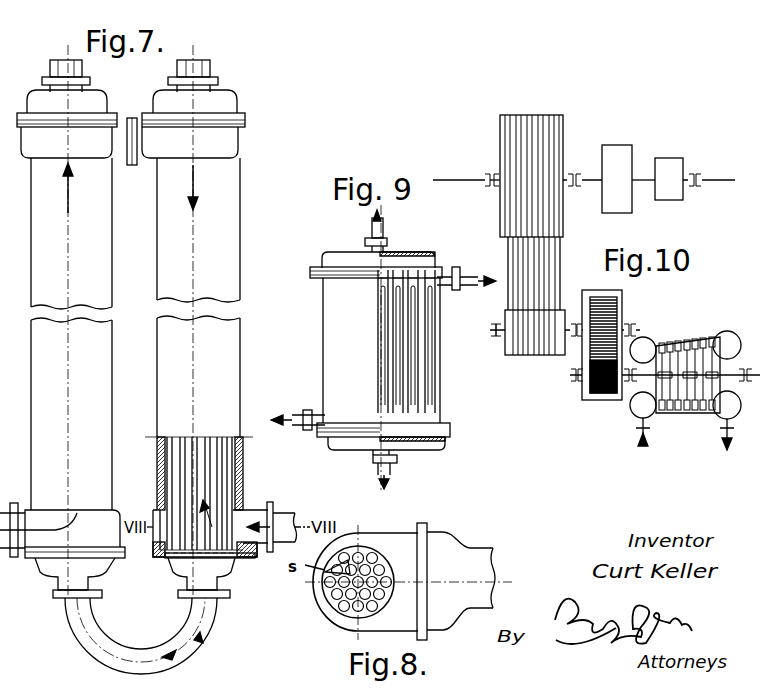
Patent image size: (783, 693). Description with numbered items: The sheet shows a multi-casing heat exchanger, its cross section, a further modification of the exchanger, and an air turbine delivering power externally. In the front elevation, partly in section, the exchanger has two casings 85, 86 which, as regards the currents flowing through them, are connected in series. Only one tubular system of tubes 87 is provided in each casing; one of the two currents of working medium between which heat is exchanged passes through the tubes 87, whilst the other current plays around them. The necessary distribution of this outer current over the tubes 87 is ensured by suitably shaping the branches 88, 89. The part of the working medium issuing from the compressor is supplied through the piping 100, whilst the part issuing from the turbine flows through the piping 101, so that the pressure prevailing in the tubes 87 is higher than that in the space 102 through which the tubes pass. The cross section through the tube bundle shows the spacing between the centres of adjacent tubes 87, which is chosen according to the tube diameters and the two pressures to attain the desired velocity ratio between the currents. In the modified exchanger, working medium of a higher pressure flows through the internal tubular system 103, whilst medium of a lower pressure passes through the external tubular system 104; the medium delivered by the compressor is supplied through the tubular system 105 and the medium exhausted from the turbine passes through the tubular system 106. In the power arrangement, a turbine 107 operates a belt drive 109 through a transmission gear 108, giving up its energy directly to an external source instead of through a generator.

In FIG. 7, the casing 85 is at (225, 212).
In FIG. 7, the casing 86 is at (98, 257).
In FIG. 7, the tubes 87 is at (213, 477).
In FIG. 8, the tubes 87 is at (333, 603).
In FIG. 7, the branch 88 is at (255, 507).
In FIG. 8, the branch 88 is at (375, 540).
In FIG. 7, the branch 89 is at (97, 148).
In FIG. 7, the piping 100 is at (205, 64).
In FIG. 7, the piping 101 is at (283, 513).
In FIG. 7, the space 102 is at (180, 452).
In FIG. 9, the internal tubular system 103 is at (435, 372).
In FIG. 9, the external tubular system 104 is at (410, 350).
In FIG. 9, the tubular system 105 is at (398, 465).
In FIG. 9, the tubular system 106 is at (477, 257).
In FIG. 10, the turbine 107 is at (683, 412).
In FIG. 10, the transmission gear 108 is at (597, 388).
In FIG. 10, the belt drive 109 is at (547, 297).